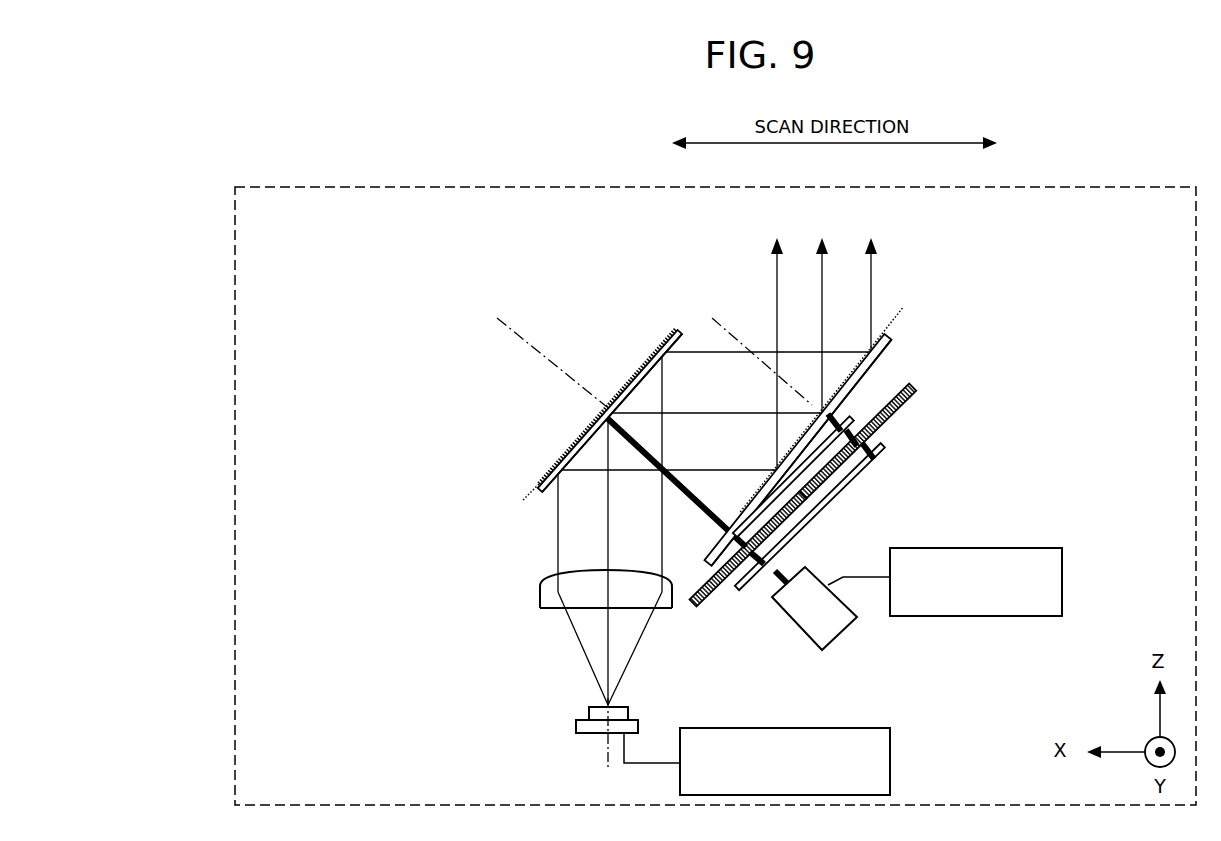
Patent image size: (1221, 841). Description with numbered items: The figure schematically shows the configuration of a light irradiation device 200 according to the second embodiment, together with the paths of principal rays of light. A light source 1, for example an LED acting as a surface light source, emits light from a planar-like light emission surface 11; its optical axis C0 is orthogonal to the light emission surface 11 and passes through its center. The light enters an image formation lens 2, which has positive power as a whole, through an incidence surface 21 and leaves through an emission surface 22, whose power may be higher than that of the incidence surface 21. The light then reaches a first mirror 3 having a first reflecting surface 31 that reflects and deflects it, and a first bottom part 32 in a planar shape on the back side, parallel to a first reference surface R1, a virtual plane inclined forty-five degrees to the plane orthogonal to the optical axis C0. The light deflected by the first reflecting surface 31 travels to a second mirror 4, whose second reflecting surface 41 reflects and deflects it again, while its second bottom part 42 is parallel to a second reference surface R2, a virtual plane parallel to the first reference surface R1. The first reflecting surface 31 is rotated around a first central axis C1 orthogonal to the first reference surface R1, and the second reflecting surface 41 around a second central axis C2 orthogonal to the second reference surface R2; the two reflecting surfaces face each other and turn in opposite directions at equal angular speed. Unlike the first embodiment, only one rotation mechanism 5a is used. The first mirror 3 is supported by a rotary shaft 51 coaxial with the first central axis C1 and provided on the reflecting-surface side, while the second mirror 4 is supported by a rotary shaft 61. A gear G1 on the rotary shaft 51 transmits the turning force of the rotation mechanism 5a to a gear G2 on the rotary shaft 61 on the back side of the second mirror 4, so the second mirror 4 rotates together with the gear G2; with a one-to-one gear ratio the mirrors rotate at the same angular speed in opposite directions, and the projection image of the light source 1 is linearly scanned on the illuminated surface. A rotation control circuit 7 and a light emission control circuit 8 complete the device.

The light irradiation device 200 is at (235, 411).
The light source 1 is at (620, 717).
The light emission surface 11 is at (610, 704).
The image formation lens 2 is at (572, 613).
The incidence surface 21 is at (558, 608).
The emission surface 22 is at (576, 571).
The first mirror 3 is at (567, 434).
The first reflecting surface 31 is at (562, 466).
The first bottom part 32 is at (607, 406).
The second mirror 4 is at (852, 411).
The second reflecting surface 41 is at (821, 409).
The second bottom part 42 is at (895, 336).
The rotary shaft 51 is at (684, 491).
The rotation mechanism 5a is at (848, 630).
The rotary shaft 61 is at (850, 414).
The rotation control circuit 7 is at (1062, 580).
The light emission control circuit 8 is at (890, 760).
The gear G1 is at (718, 592).
The gear G2 is at (898, 408).
The first reference surface R1 is at (525, 495).
The second reference surface R2 is at (923, 323).
The optical axis C0 is at (607, 749).
The first central axis C1 is at (536, 354).
The second central axis C2 is at (751, 349).